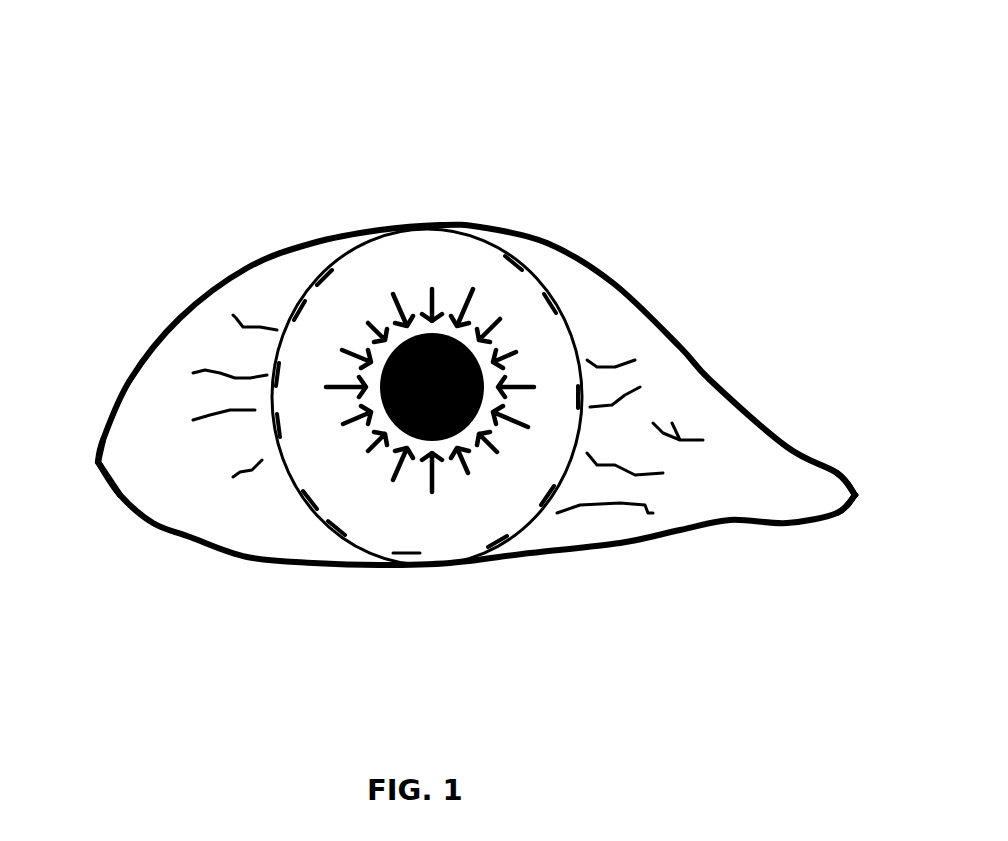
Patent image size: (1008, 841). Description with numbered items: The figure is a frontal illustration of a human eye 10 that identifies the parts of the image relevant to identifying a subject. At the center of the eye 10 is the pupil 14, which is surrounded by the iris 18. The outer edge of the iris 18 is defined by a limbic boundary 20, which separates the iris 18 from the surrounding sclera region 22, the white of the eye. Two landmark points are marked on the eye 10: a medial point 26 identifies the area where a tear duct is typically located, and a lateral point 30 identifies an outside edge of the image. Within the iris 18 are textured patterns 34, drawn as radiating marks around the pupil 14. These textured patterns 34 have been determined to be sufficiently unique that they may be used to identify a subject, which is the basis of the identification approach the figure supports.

The eye 10 is at (413, 82).
The pupil 14 is at (423, 333).
The iris 18 is at (452, 510).
The limbic boundary 20 is at (527, 257).
The sclera region 22 is at (200, 482).
The medial point 26 is at (850, 510).
The lateral point 30 is at (98, 470).
The textured patterns 34 is at (507, 463).